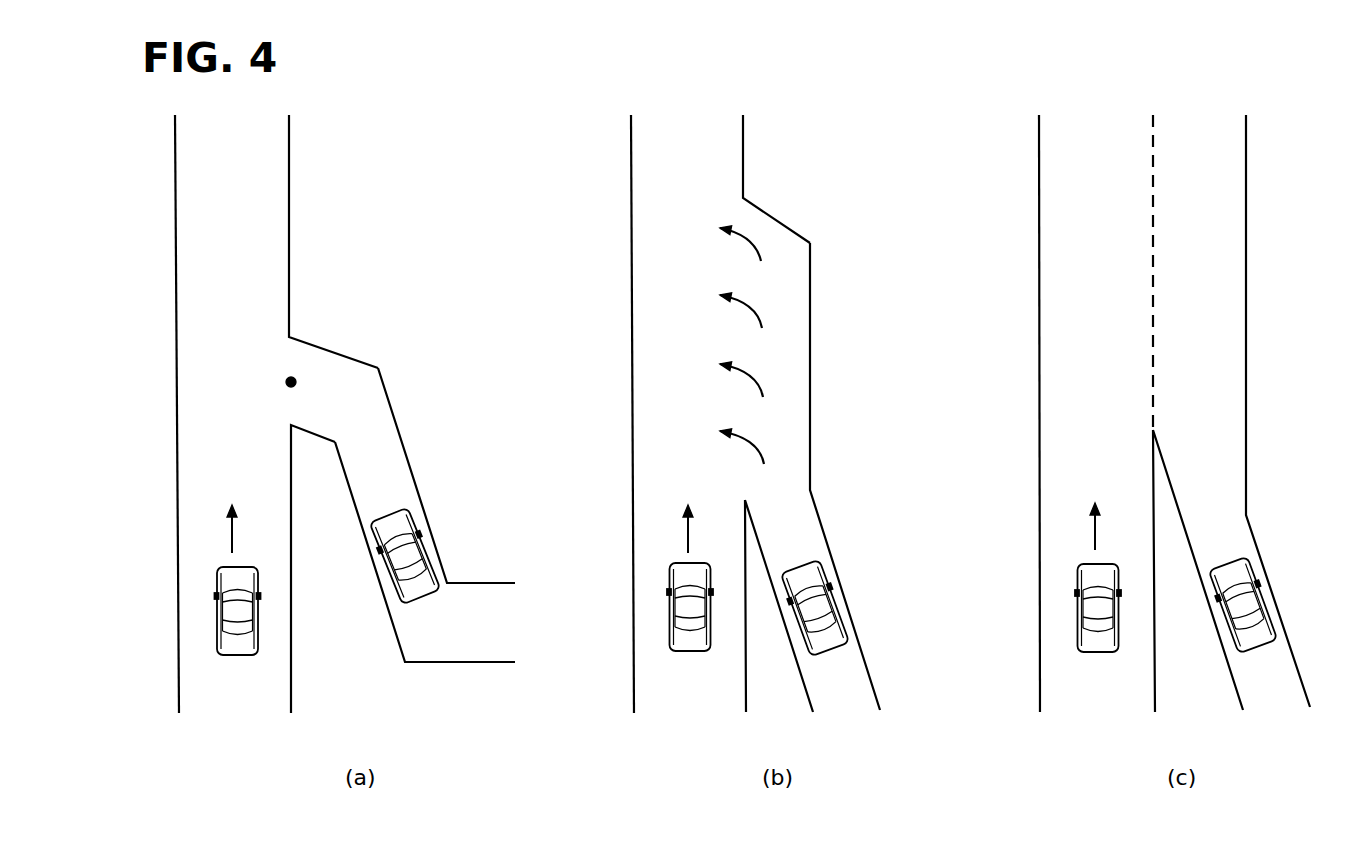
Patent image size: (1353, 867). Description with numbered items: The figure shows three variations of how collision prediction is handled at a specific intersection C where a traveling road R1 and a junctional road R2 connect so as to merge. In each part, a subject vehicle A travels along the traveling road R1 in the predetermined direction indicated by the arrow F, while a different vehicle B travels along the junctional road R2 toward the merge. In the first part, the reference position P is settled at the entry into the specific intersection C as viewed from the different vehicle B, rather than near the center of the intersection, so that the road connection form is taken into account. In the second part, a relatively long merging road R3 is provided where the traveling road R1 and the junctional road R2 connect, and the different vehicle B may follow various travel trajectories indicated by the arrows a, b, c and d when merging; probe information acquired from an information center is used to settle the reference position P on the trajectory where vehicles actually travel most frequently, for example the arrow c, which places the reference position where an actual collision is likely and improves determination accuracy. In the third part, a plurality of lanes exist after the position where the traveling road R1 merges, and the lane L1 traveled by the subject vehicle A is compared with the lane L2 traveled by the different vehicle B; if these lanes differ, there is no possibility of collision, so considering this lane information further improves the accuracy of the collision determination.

The traveling road R1 is at (178, 507).
The junctional road R2 is at (400, 428).
The merging road R3 is at (812, 345).
The lane L1 is at (1065, 242).
The lane L2 is at (1210, 245).
The specific intersection C is at (236, 357).
The reference position P is at (291, 382).
The subject vehicle A is at (217, 600).
The different vehicle B is at (415, 545).
The arrow (traveling direction) F is at (663, 516).
The arrow (travel trajectory) a is at (733, 442).
The arrow (travel trajectory) b is at (733, 375).
The arrow (travel trajectory) c is at (732, 306).
The arrow (travel trajectory) d is at (732, 239).